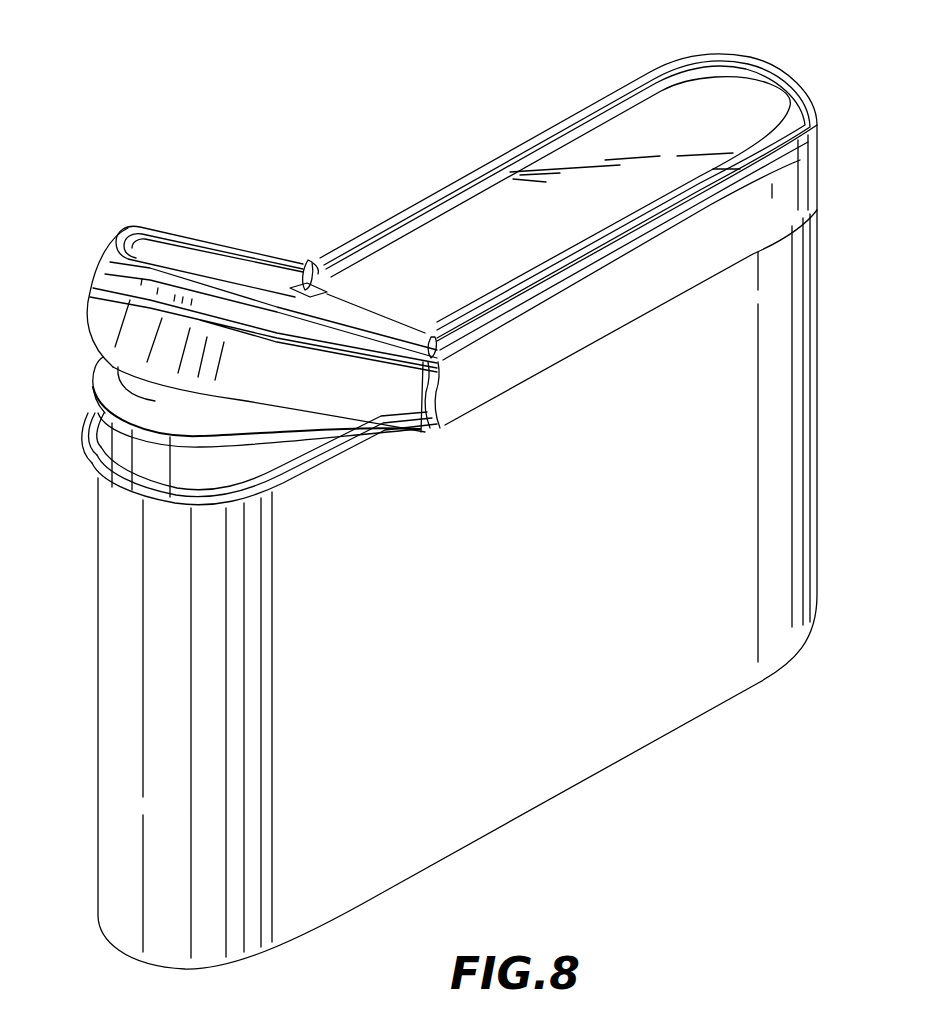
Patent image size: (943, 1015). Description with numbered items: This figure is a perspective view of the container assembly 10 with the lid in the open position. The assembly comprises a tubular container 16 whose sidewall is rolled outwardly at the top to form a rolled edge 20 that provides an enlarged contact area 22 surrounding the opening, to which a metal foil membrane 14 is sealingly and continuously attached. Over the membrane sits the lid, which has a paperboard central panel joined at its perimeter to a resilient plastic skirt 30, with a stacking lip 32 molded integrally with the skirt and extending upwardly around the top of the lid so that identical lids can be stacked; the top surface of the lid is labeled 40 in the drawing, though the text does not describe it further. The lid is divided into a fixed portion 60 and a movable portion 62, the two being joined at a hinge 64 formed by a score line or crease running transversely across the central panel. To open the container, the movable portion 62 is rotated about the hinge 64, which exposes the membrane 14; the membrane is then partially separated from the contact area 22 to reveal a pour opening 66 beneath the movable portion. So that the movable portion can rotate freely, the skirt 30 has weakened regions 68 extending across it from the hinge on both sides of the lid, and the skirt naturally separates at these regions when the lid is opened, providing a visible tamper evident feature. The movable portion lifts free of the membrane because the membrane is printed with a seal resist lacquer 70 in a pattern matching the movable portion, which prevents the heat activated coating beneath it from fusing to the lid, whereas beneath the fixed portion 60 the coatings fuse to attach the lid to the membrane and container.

The container assembly 10 is at (833, 379).
The membrane 14 is at (155, 402).
The tubular container 16 is at (508, 566).
The rolled edge 20 is at (282, 475).
The contact area 22 is at (90, 463).
The plastic skirt 30 is at (817, 167).
The stacking lip 32 is at (648, 70).
The lid top surface 40 is at (466, 256).
The fixed portion 60 is at (800, 90).
The movable portion 62 is at (92, 280).
The hinge 64 is at (310, 262).
The pour opening 66 is at (120, 453).
The weakened regions 68 is at (447, 417).
The seal resist lacquer 70 is at (103, 363).